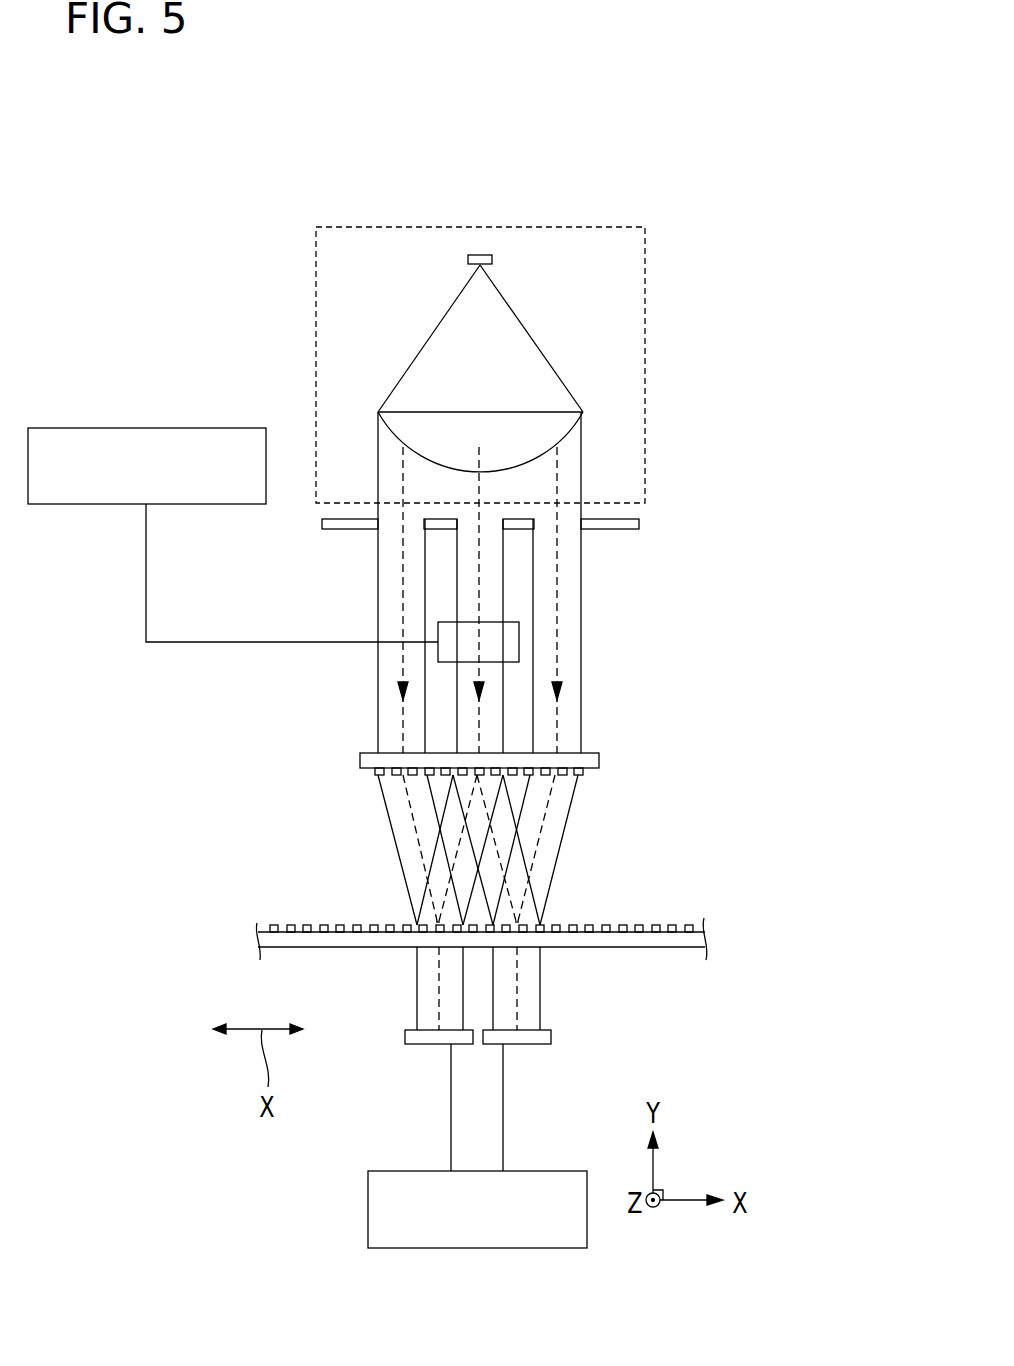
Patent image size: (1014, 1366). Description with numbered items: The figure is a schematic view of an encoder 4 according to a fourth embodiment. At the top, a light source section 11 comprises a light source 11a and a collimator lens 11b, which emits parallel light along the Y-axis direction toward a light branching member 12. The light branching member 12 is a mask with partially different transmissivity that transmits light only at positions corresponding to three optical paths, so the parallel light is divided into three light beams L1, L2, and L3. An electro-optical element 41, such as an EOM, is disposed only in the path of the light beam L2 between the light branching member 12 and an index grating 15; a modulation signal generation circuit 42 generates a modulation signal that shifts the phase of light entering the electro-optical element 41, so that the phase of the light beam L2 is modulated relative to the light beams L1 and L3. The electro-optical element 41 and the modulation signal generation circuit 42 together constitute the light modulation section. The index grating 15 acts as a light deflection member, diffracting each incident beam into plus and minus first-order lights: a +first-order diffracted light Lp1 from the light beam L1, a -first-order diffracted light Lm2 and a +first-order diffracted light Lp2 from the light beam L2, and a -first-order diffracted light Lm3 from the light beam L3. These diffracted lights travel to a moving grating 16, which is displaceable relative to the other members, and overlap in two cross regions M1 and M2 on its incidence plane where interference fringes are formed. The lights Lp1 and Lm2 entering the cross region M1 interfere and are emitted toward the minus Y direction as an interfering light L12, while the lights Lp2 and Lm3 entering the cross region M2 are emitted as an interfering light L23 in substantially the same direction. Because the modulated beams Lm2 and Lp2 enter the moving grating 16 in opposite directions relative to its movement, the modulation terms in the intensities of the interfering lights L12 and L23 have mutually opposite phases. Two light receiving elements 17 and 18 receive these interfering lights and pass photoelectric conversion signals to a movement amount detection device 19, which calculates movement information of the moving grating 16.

The encoder 4 is at (212, 218).
The light source section 11 is at (645, 232).
The light source 11a is at (492, 260).
The collimator lens 11b is at (532, 417).
The light branching member 12 is at (640, 522).
The modulation signal generation circuit 42 is at (148, 428).
The light beam L1 is at (385, 610).
The light beam L2 is at (490, 597).
The light beam L3 is at (573, 628).
The electro-optical element 41 is at (519, 645).
The index grating 15 is at (599, 762).
The +first-order diffracted light Lp1 is at (387, 798).
The -first-order diffracted light Lm2 is at (453, 836).
The +first-order diffracted light Lp2 is at (503, 836).
The -first-order diffracted light Lm3 is at (567, 800).
The cross region M1 is at (438, 925).
The cross region M2 is at (517, 925).
The moving grating 16 is at (683, 935).
The interfering light L12 is at (427, 999).
The interfering light L23 is at (535, 999).
The light receiving element 17 is at (419, 1044).
The light receiving element 18 is at (535, 1044).
The movement amount detection device 19 is at (480, 1248).